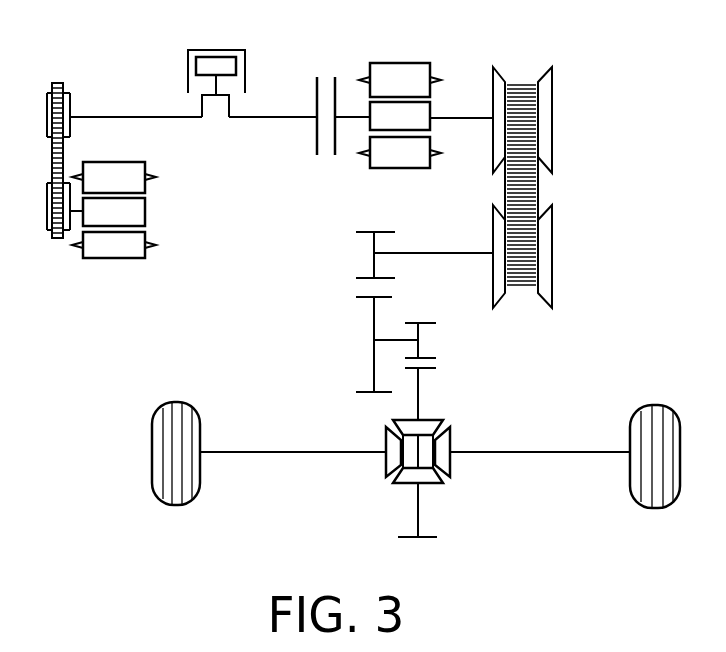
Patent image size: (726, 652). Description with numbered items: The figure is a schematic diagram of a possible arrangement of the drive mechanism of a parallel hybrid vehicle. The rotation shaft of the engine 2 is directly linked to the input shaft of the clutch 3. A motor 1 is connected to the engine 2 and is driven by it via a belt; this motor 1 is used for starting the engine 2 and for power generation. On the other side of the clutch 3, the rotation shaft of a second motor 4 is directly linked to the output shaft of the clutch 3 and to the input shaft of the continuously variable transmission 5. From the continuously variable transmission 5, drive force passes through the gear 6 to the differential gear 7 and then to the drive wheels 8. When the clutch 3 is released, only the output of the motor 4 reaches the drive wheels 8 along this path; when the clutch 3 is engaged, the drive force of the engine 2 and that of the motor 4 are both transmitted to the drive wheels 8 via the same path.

The motor 1 is at (115, 258).
The engine 2 is at (225, 50).
The clutch 3 is at (317, 140).
The motor 4 is at (417, 63).
The continuously variable transmission 5 is at (552, 122).
The gear 6 is at (373, 315).
The differential gear 7 is at (450, 458).
The drive wheels 8 is at (152, 500).